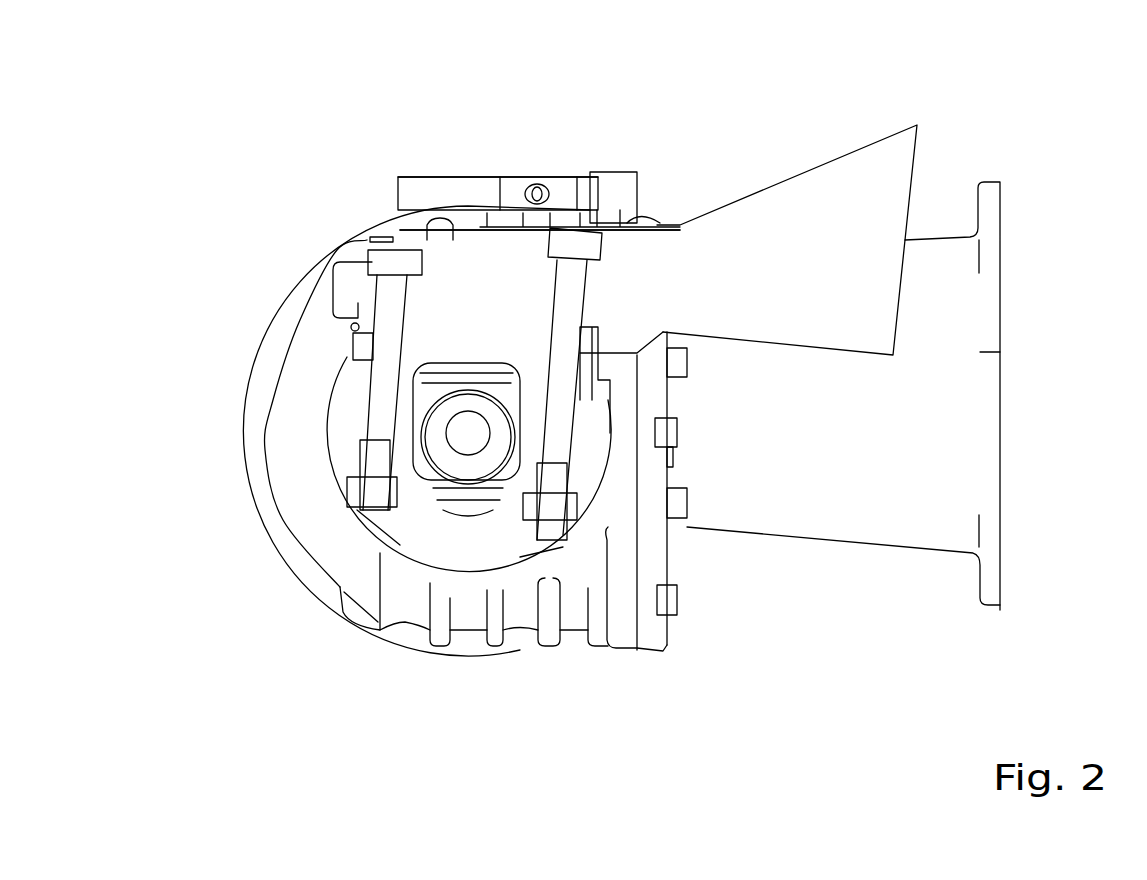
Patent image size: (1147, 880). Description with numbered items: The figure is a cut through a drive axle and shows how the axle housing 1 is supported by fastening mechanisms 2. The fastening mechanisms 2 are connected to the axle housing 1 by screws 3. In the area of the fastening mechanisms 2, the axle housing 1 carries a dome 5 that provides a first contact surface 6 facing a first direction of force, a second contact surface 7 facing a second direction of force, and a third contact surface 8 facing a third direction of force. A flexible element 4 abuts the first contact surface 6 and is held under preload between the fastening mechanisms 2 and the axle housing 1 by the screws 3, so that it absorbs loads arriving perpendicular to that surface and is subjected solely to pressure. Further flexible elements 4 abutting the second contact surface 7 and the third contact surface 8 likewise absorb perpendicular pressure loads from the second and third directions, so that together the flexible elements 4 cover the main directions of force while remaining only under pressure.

The axle housing 1 is at (647, 540).
The fastening mechanisms 2 is at (810, 220).
The screws 3 is at (383, 293).
The flexible element 4 is at (455, 305).
The dome 5 is at (517, 342).
The first contact surface 6 is at (440, 333).
The second contact surface 7 is at (362, 357).
The third contact surface 8 is at (592, 327).